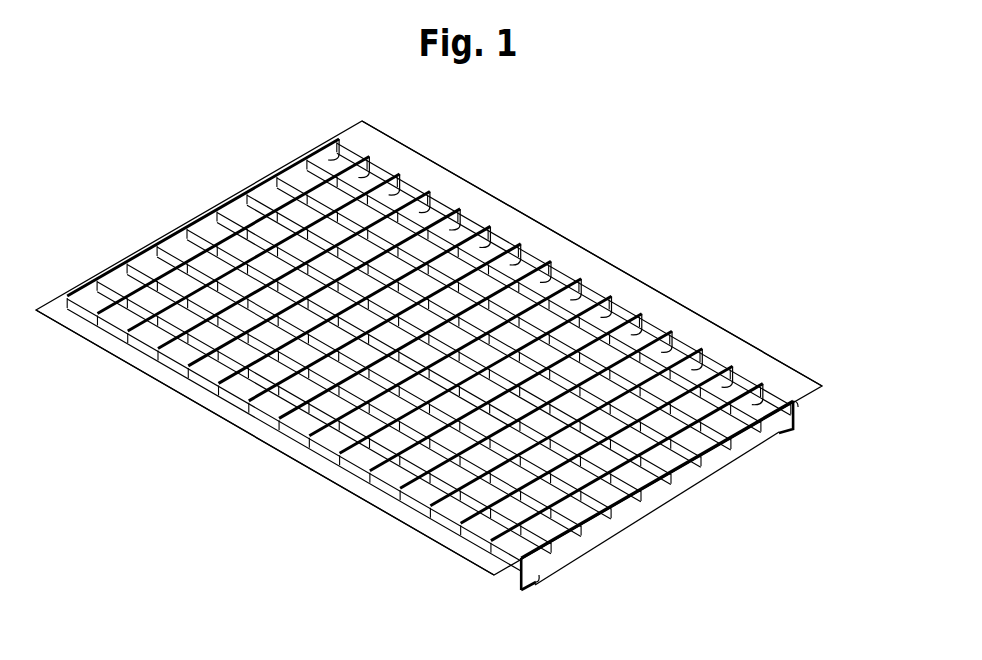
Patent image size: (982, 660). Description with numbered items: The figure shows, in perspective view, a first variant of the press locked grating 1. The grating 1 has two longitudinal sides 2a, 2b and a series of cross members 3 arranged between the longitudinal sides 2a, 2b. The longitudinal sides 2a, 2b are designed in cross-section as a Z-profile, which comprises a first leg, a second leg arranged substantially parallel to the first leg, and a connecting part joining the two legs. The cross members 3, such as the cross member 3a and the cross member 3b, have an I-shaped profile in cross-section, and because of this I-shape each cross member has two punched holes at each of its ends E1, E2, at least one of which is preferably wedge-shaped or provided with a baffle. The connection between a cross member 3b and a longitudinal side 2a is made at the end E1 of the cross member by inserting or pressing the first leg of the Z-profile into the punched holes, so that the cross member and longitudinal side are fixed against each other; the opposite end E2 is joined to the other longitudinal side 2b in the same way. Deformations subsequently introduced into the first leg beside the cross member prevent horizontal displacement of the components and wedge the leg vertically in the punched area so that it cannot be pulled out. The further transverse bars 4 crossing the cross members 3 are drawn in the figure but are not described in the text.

The grating 1 is at (140, 186).
The longitudinal side 2a is at (180, 385).
The longitudinal side 2b is at (767, 368).
The cross members 3 is at (600, 312).
The cross member 3a is at (633, 523).
The cross member 3b is at (530, 574).
The crossbar 4 is at (220, 220).
The end of the cross member E1 is at (537, 591).
The end of the cross member E2 is at (798, 438).